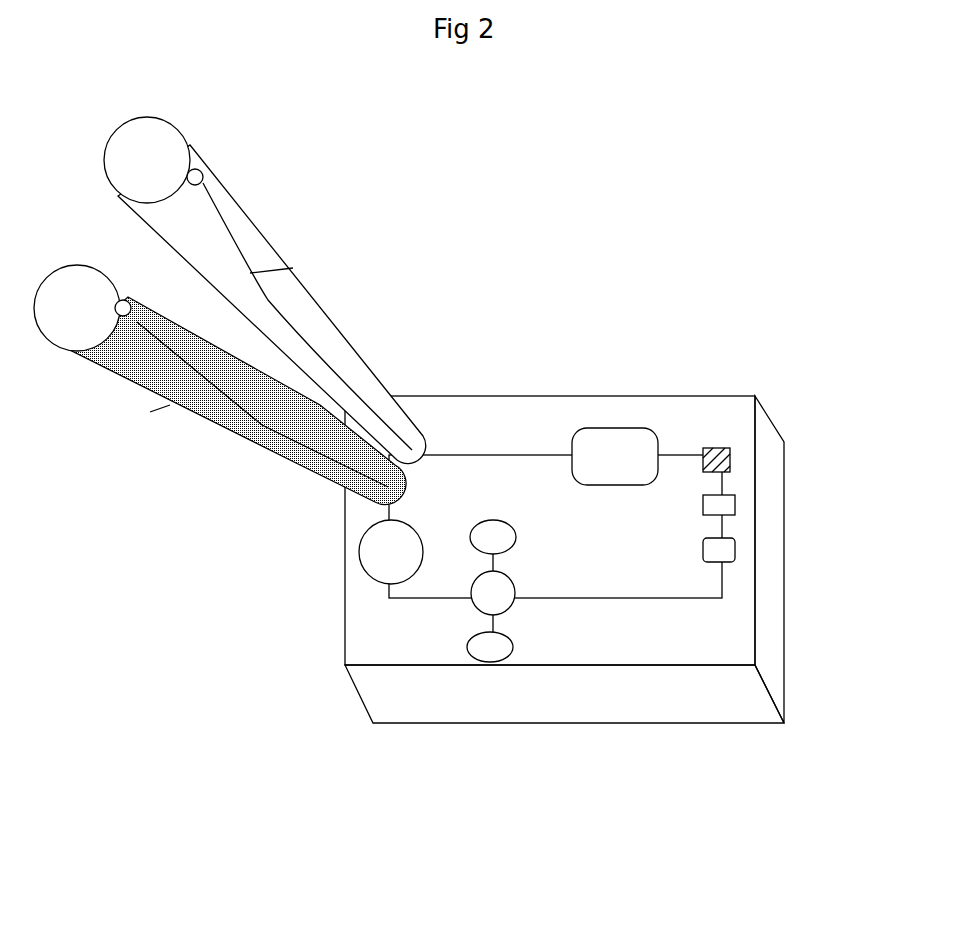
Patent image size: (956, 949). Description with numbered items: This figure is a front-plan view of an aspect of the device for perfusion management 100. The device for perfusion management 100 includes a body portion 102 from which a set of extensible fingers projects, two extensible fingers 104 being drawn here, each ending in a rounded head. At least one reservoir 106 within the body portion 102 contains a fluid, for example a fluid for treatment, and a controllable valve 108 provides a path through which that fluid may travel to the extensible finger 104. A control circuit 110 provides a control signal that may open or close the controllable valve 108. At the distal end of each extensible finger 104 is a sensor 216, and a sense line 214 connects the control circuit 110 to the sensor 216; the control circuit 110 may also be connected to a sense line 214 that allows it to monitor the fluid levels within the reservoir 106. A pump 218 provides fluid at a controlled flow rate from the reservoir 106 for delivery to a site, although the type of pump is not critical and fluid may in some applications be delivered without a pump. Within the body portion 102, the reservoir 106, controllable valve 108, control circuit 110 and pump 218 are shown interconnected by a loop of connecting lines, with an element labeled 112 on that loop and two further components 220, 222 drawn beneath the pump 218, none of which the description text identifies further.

The device for perfusion management 100 is at (495, 400).
The body portion 102 is at (732, 703).
The extensible finger 104 is at (323, 321).
The reservoir 106 is at (530, 543).
The controllable valve 108 is at (359, 546).
The control circuit 110 is at (637, 428).
The circuit connection 112 is at (620, 598).
The sense line 214 is at (293, 268).
The sensor 216 is at (213, 176).
The pump 218 is at (730, 457).
The memory 220 is at (732, 503).
The transceiver 222 is at (735, 553).